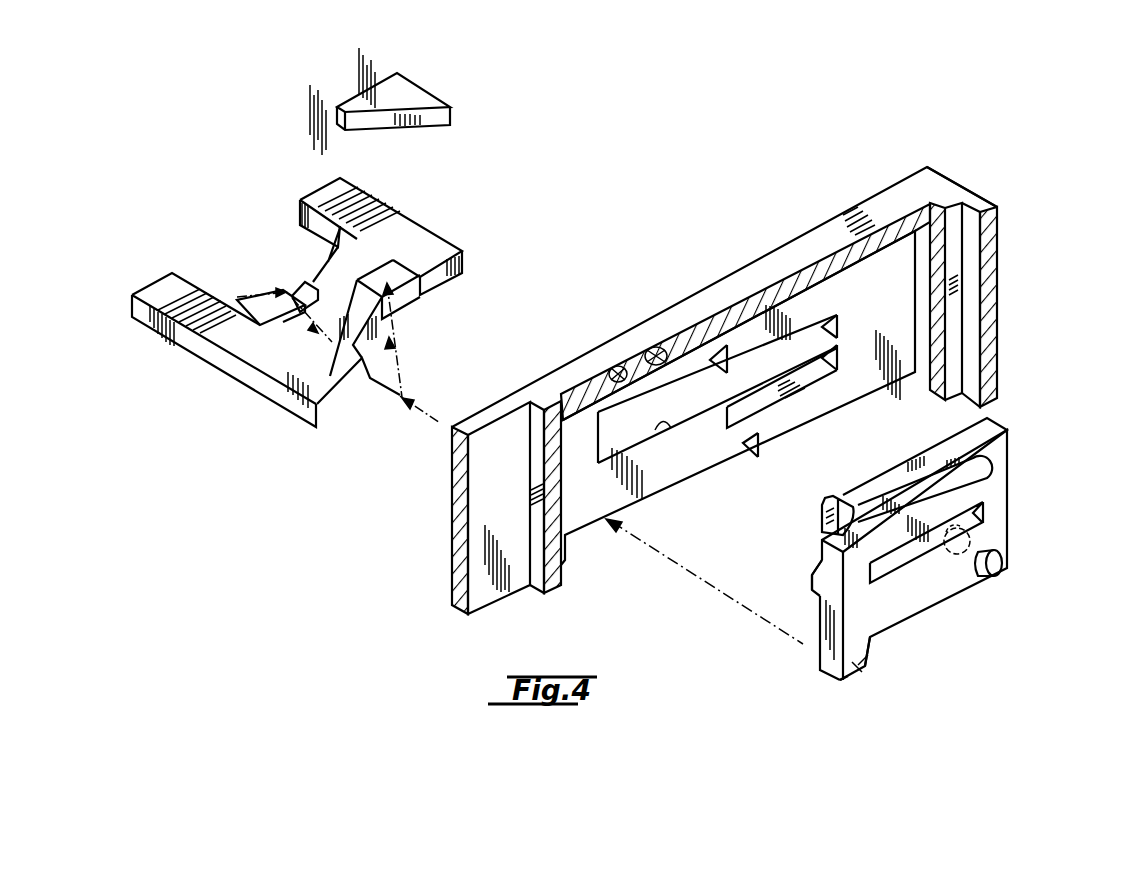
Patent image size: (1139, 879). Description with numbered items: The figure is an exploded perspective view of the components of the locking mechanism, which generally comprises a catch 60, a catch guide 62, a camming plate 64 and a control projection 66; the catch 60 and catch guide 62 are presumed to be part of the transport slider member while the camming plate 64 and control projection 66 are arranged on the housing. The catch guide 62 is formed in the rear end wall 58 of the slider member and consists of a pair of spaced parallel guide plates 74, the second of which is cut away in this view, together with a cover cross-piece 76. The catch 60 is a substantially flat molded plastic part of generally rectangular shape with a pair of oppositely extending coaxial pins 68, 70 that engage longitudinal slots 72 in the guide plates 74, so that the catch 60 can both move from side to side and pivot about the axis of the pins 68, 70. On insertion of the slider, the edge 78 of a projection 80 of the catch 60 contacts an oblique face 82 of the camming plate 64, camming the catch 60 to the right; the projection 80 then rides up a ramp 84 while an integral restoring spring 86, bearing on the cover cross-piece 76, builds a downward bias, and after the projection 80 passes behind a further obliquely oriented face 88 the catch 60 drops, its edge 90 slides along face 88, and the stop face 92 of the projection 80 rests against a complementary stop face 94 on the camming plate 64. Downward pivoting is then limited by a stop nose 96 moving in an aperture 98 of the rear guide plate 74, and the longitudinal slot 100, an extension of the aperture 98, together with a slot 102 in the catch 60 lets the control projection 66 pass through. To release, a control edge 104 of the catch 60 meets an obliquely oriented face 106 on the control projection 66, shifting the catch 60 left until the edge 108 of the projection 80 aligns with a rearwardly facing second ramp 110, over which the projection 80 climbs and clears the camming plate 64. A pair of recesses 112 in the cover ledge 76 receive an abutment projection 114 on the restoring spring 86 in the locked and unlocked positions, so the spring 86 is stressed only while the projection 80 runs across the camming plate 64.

The rear end wall 58 is at (447, 540).
The catch 60 is at (1055, 460).
The catch guide 62 is at (752, 398).
The camming plate 64 is at (407, 289).
The control projection 66 is at (434, 100).
The pin 68 is at (994, 570).
The pin 70 is at (970, 538).
The slot 72 is at (780, 392).
The guide plate 74 is at (953, 238).
The cover cross-piece 76 is at (643, 362).
The edge 78 is at (832, 577).
The projection 80 is at (855, 663).
The oblique face 82 is at (330, 402).
The ramp 84 is at (425, 290).
The restoring spring 86 is at (868, 493).
The obliquely oriented face 88 is at (347, 252).
The edge 90 is at (872, 648).
The stop face 92 is at (863, 658).
The stop face 94 is at (309, 285).
The stop nose 96 is at (808, 578).
The aperture 98 is at (664, 432).
The longitudinal slot 100 is at (808, 345).
The slot 102 is at (920, 543).
The control edge 104 is at (985, 510).
The obliquely oriented face 106 is at (386, 117).
The edge 108 is at (848, 676).
The second ramp 110 is at (258, 326).
The recess 112 is at (613, 364).
The abutment projection 114 is at (822, 503).